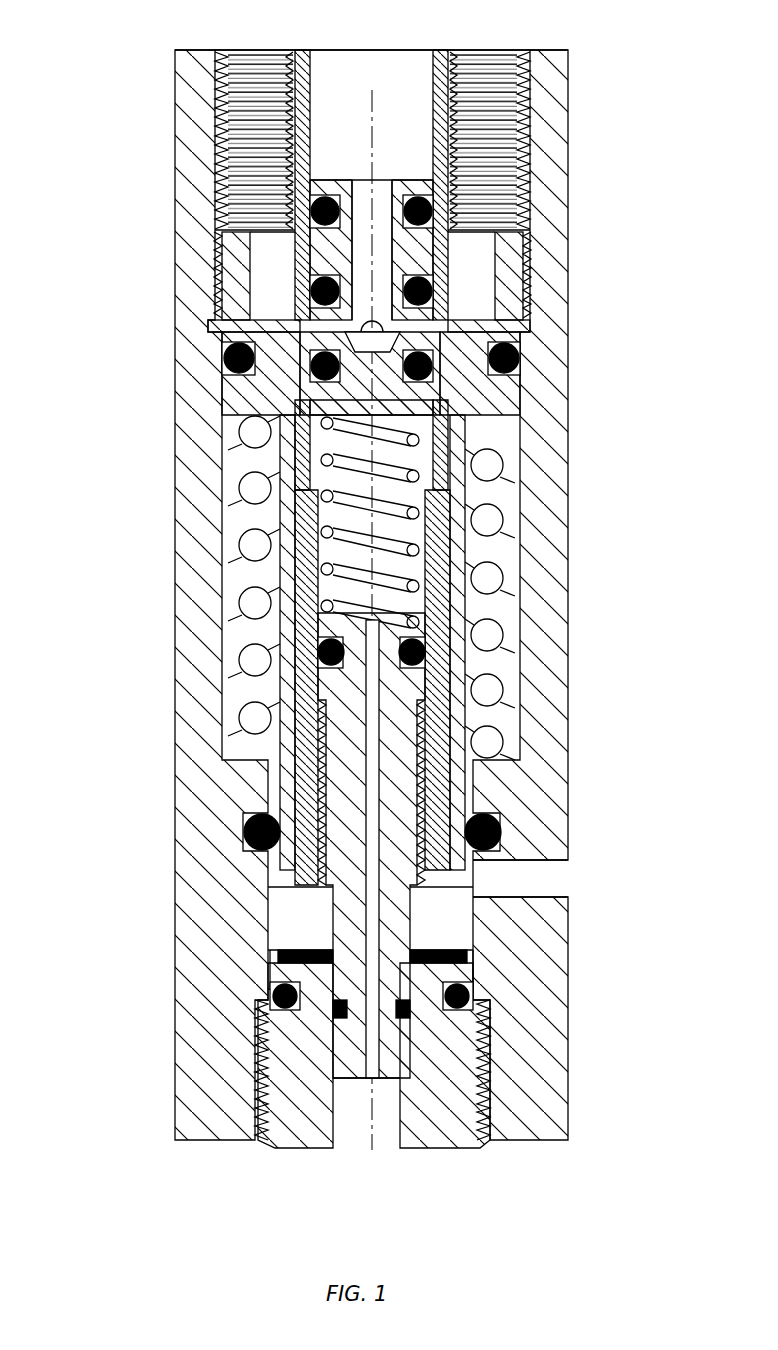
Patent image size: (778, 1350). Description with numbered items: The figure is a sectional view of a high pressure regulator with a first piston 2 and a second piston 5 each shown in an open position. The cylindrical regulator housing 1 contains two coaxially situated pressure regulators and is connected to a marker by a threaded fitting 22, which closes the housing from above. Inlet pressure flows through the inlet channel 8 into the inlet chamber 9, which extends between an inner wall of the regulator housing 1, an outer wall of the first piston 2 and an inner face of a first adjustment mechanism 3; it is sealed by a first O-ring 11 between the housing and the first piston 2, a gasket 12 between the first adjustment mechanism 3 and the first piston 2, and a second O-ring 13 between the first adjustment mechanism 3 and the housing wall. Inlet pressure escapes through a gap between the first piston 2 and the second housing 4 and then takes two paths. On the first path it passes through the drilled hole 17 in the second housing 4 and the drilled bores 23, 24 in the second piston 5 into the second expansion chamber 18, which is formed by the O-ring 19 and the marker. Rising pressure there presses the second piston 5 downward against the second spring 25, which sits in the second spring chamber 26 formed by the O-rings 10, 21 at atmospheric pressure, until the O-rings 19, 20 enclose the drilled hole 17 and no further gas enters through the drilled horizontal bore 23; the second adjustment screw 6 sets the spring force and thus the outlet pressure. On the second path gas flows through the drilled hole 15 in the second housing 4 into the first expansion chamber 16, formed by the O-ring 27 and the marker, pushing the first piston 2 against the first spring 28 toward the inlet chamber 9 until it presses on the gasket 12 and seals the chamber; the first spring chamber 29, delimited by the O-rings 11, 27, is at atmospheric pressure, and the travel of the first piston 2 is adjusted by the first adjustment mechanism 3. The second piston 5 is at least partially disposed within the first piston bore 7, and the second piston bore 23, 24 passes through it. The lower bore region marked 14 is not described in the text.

The regulator housing 1 is at (545, 600).
The first piston 2 is at (510, 395).
The first adjustment mechanism 3 is at (450, 1060).
The second housing 4 is at (300, 767).
The second piston 5 is at (305, 263).
The second adjustment screw 6 is at (340, 905).
The first piston bore 7 is at (290, 588).
The inlet channel 8 is at (520, 880).
The inlet chamber 9 is at (470, 910).
The O-ring 10 is at (420, 655).
The first O-ring 11 is at (495, 825).
The gasket 12 is at (465, 960).
The second O-ring 13 is at (470, 990).
The bottom bore 14 is at (398, 1150).
The drilled hole 15 is at (480, 280).
The first expansion chamber 16 is at (500, 170).
The drilled hole 17 is at (440, 340).
The second expansion chamber 18 is at (337, 75).
The O-ring 19 is at (300, 212).
The O-ring 20 is at (335, 333).
The O-ring 21 is at (320, 378).
The threaded fitting 22 is at (530, 60).
The drilled horizontal bore 23 is at (232, 350).
The drilled bore 24 is at (360, 197).
The second spring 25 is at (325, 425).
The second spring chamber 26 is at (320, 478).
The O-ring 27 is at (515, 365).
The first spring 28 is at (500, 463).
The first spring chamber 29 is at (505, 545).